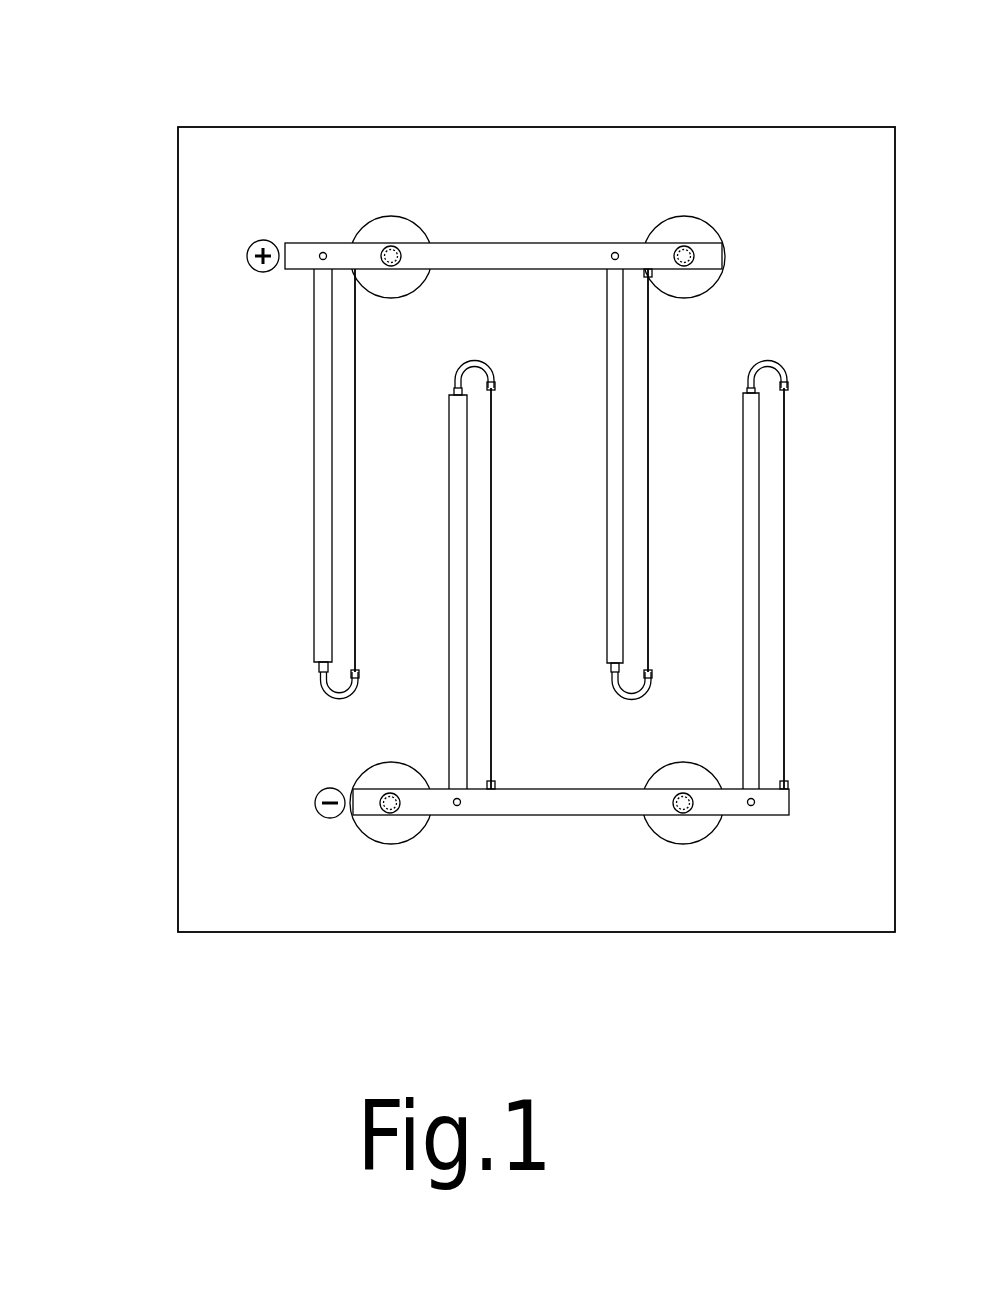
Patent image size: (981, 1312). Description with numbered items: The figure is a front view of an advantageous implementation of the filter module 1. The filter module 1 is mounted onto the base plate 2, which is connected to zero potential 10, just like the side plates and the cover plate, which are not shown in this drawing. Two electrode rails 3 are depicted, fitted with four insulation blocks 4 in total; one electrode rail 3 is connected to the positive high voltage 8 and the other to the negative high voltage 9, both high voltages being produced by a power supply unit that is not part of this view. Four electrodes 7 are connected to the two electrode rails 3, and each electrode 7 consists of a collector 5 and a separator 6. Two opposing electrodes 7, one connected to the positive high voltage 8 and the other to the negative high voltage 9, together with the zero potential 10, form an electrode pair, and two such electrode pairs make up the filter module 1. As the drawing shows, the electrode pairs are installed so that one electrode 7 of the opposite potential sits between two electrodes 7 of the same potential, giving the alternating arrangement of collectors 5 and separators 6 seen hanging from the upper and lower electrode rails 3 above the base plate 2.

The filter module 1 is at (178, 127).
The base plate 2 is at (563, 187).
The electrode rail 3 is at (457, 253).
The insulation block 4 is at (687, 228).
The collector 5 is at (316, 438).
The separator 6 is at (355, 603).
The electrode 7 is at (333, 695).
The positive high voltage 8 is at (245, 248).
The negative high voltage 9 is at (310, 802).
The zero potential 10 is at (292, 902).